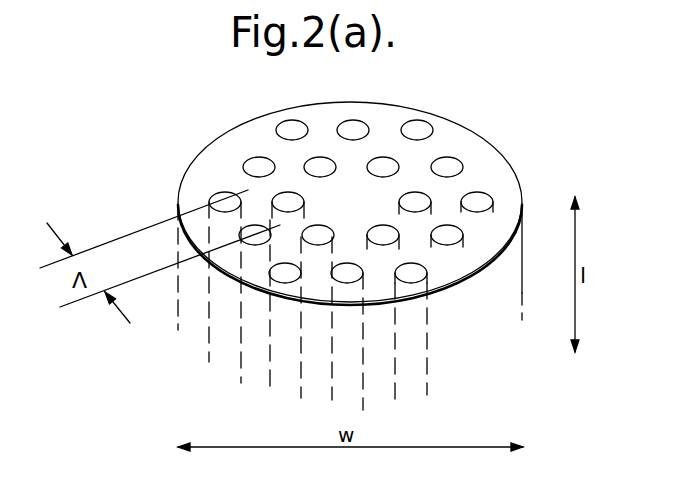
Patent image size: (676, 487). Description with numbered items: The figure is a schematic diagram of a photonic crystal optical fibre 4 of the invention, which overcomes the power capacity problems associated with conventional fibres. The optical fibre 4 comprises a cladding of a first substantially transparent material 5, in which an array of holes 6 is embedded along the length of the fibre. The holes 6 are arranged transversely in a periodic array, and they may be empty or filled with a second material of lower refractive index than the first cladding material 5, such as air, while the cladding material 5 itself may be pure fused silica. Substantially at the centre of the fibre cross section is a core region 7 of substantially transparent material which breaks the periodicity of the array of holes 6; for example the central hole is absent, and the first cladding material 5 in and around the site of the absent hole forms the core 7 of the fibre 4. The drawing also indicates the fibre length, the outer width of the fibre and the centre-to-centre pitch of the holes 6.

The optical fibre 4 is at (376, 248).
The first substantially transparent material 5 is at (457, 140).
The holes 6 is at (338, 122).
The core region 7 is at (365, 188).